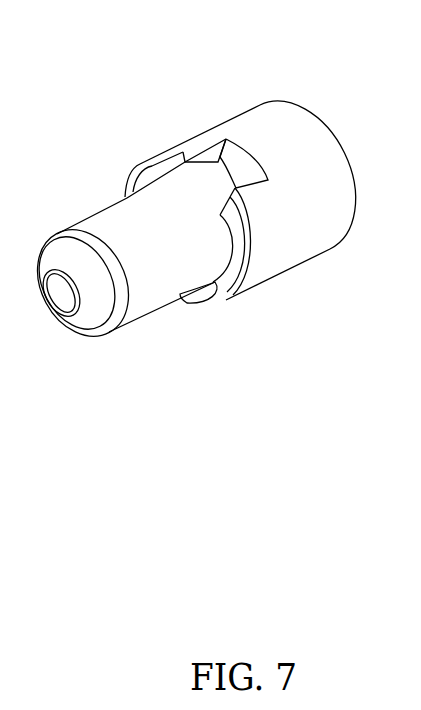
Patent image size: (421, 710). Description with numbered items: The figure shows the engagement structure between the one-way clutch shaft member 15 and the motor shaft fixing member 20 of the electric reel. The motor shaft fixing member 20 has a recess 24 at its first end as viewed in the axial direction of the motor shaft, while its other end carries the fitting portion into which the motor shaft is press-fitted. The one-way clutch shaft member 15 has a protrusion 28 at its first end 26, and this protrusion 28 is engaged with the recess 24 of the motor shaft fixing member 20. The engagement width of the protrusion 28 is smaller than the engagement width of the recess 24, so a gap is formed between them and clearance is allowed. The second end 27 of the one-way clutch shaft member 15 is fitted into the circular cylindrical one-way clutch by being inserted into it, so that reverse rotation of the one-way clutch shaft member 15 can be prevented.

The one-way clutch shaft member 15 is at (136, 318).
The motor shaft fixing member 20 is at (274, 120).
The recess 24 is at (217, 174).
The first end 26 is at (210, 190).
The second end 27 is at (148, 270).
The protrusion 28 is at (233, 186).